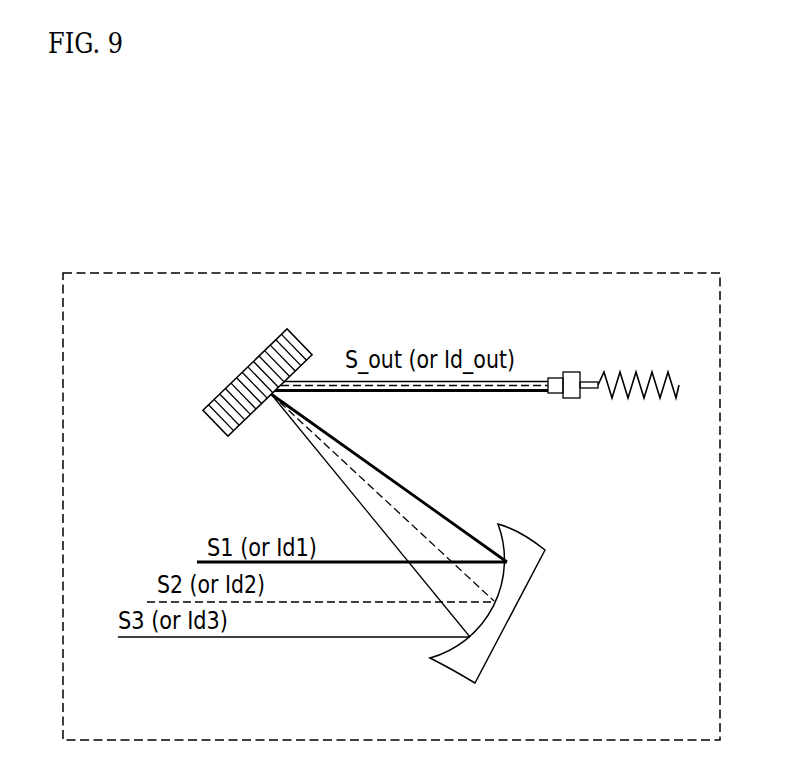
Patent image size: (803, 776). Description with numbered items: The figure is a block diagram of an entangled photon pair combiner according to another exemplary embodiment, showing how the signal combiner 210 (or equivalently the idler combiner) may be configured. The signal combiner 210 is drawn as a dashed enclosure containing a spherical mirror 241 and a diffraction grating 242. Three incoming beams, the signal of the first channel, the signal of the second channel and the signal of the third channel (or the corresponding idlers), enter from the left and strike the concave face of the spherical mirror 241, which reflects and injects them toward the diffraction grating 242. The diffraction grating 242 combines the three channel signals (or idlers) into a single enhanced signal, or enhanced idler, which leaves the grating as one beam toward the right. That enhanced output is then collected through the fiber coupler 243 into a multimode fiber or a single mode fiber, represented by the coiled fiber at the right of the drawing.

The signal combiner 210 is at (390, 273).
The spherical mirror 241 is at (525, 579).
The diffraction grating 242 is at (229, 382).
The fiber coupler 243 is at (573, 398).